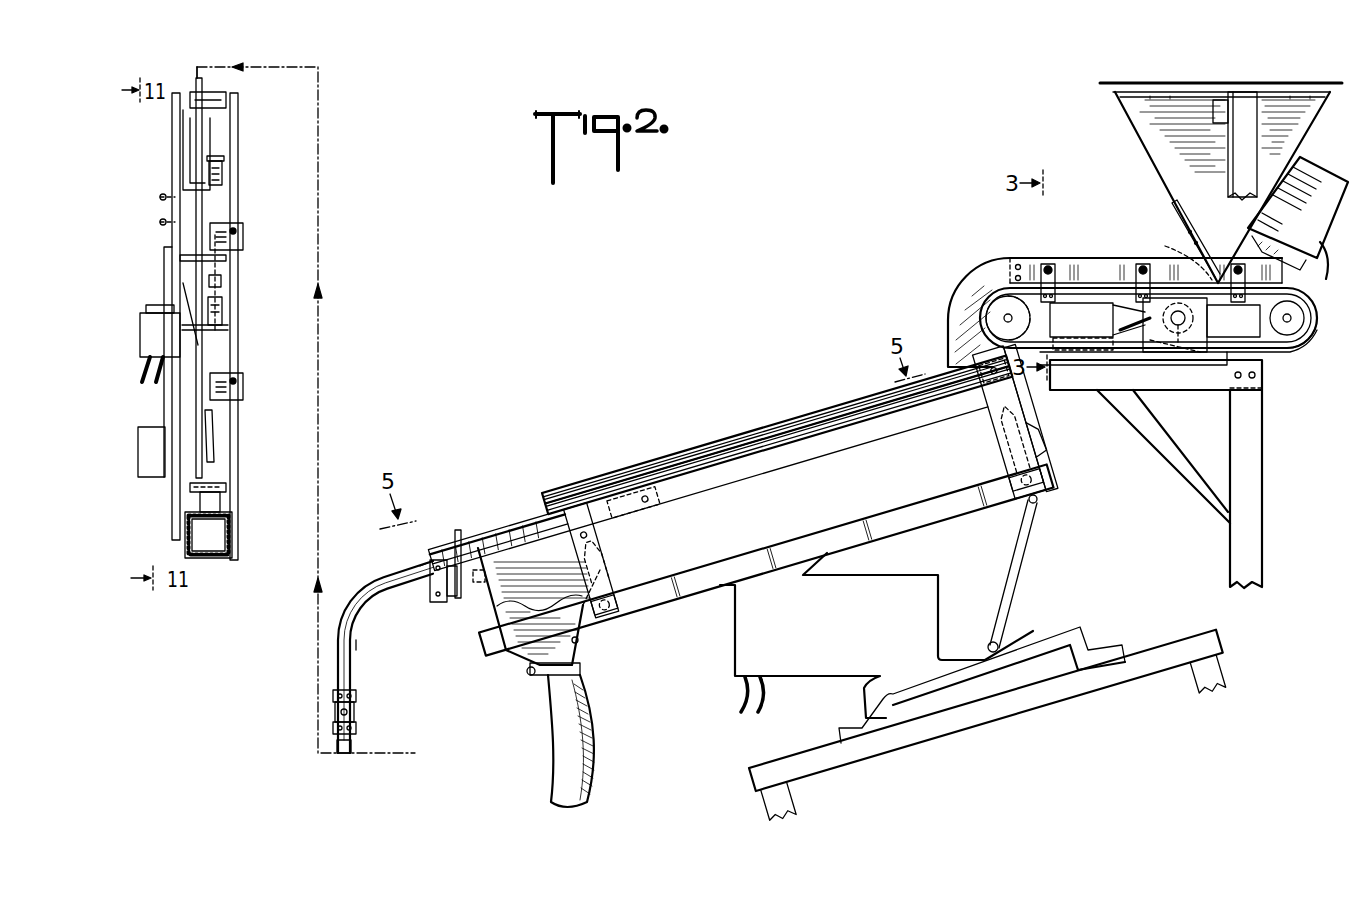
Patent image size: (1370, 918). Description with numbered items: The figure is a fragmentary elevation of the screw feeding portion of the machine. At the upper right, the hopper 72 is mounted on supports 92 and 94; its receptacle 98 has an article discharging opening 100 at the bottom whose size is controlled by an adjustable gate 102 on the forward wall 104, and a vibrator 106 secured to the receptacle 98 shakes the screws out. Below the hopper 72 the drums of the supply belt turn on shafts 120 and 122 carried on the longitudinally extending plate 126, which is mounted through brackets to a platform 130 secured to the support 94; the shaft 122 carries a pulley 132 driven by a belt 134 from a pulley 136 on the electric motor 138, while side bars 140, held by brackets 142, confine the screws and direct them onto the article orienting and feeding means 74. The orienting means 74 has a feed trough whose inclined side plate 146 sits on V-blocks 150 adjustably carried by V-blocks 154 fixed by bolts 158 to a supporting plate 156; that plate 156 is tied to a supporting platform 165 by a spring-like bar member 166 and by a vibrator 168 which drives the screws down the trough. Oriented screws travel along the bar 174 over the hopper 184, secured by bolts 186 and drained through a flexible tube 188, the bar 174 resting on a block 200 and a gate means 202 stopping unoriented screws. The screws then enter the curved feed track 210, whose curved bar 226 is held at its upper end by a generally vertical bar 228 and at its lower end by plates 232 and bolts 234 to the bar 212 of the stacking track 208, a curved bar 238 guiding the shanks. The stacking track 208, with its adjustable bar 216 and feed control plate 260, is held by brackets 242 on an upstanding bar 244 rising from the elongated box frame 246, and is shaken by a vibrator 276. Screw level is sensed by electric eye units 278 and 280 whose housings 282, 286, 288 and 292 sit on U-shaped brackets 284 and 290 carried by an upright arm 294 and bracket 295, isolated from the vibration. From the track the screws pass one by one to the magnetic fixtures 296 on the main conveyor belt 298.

The hopper 72 is at (1286, 82).
The article orienting and feeding means 74 is at (790, 406).
The support 92 is at (1255, 462).
The support 94 is at (1132, 450).
The receptacle 98 is at (1152, 151).
The article discharging opening 100 is at (1168, 252).
The adjustable gate 102 is at (1160, 213).
The forward wall 104 is at (1129, 130).
The vibrator 106 is at (1310, 176).
The shaft 120 is at (1003, 318).
The shaft 122 is at (1310, 317).
The longitudinally extending plate 126 is at (1250, 328).
The platform 130 is at (1182, 374).
The pulley 132 is at (1292, 319).
The belt 134 is at (1270, 346).
The pulley 136 is at (1174, 356).
The electric motor 138 is at (1092, 332).
The side bars 140 is at (1035, 258).
The brackets 142 is at (1057, 277).
The inclined side plate 146 is at (678, 455).
The V-blocks 150 is at (612, 538).
The V-blocks 154 is at (606, 580).
The supporting plate 156 is at (944, 506).
The bolts 158 is at (597, 614).
The supporting platform 165 is at (1003, 712).
The spring-like bar member 166 is at (1018, 572).
The vibrator 168 is at (923, 596).
The bar 174 is at (532, 542).
The hopper 184 is at (493, 640).
The bolts 186 is at (578, 640).
The flexible tube 188 is at (556, 728).
The block 200 is at (448, 604).
The gate means 202 is at (468, 530).
The stacking track 208 is at (233, 72).
The curved feed track 210 is at (405, 575).
The bar 212 is at (196, 84).
The bar 216 is at (352, 748).
The bar 226 is at (370, 605).
The generally vertical bar 228 is at (430, 582).
The plates 232 is at (356, 705).
The bolts 234 is at (356, 692).
The curved bar 238 is at (370, 626).
The brackets 242 is at (243, 232).
The upstanding bar 244 is at (228, 345).
The elongated box frame 246 is at (208, 560).
The feed control plate 260 is at (216, 462).
The vibrator 276 is at (140, 320).
The electric eye unit 278 is at (226, 281).
The electric eye unit 280 is at (226, 140).
The housing 282 is at (226, 296).
The U-shaped bracket 284 is at (224, 318).
The housing 286 is at (228, 257).
The housing 288 is at (225, 160).
The U-shaped bracket 290 is at (224, 184).
The housing 292 is at (221, 110).
The upright arm 294 is at (172, 245).
The bracket 295 is at (150, 440).
The magnetic fixtures 296 is at (226, 478).
The main conveyor belt 298 is at (222, 500).